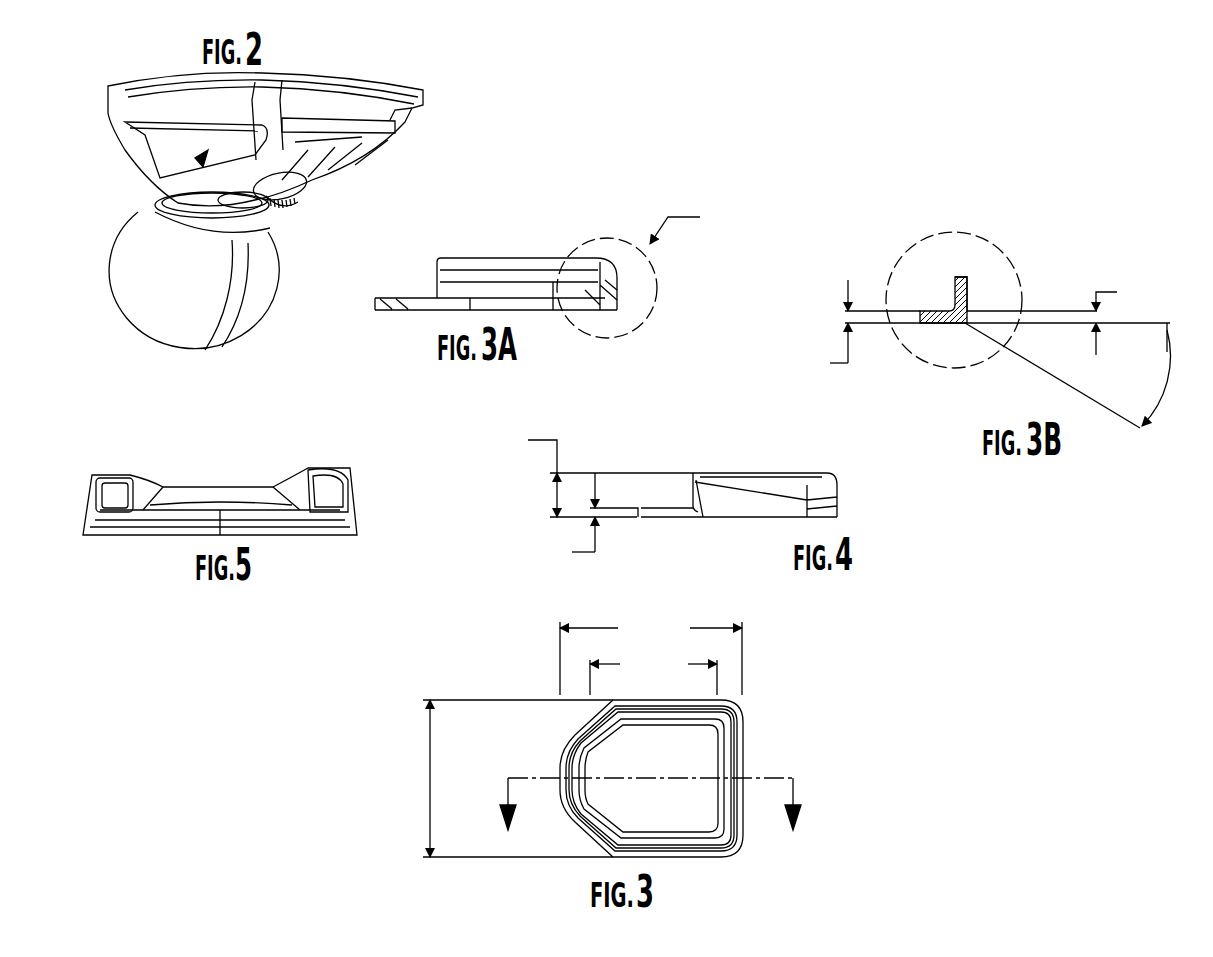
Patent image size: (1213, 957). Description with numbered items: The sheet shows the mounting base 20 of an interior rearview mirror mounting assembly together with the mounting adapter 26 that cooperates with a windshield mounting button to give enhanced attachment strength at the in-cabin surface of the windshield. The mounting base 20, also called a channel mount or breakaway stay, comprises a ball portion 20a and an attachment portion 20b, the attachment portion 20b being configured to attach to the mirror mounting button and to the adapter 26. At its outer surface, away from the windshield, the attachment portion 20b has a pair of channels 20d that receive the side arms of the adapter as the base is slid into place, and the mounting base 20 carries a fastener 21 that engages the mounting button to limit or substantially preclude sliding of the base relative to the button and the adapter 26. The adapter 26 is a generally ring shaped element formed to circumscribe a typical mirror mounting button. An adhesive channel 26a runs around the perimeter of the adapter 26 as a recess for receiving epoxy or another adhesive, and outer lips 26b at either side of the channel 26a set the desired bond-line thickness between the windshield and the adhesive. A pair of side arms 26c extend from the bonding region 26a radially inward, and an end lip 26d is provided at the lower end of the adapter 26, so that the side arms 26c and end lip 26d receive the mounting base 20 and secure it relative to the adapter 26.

In FIG. 2, the mounting base 20 is at (422, 162).
In FIG. 2, the ball portion 20a is at (196, 344).
In FIG. 2, the attachment portion 20b is at (340, 153).
In FIG. 2, the channels 20d is at (208, 150).
In FIG. 2, the fastener 21 is at (290, 207).
In FIG. 3A, the mounting adapter 26 is at (523, 228).
In FIG. 5, the mounting adapter 26 is at (173, 445).
In FIG. 4, the mounting adapter 26 is at (766, 452).
In FIG. 3, the mounting adapter 26 is at (774, 664).
In FIG. 3B, the adhesive channel 26a is at (950, 326).
In FIG. 3, the adhesive channel 26a is at (730, 772).
In FIG. 3B, the outer lips 26b is at (929, 318).
In FIG. 3, the outer lips 26b is at (722, 845).
In FIG. 3A, the side arms 26c is at (470, 258).
In FIG. 5, the side arms 26c is at (106, 478).
In FIG. 4, the side arms 26c is at (692, 472).
In FIG. 3, the side arms 26c is at (688, 731).
In FIG. 3A, the end lip 26d is at (600, 262).
In FIG. 3B, the end lip 26d is at (966, 292).
In FIG. 5, the end lip 26d is at (226, 490).
In FIG. 4, the end lip 26d is at (825, 478).